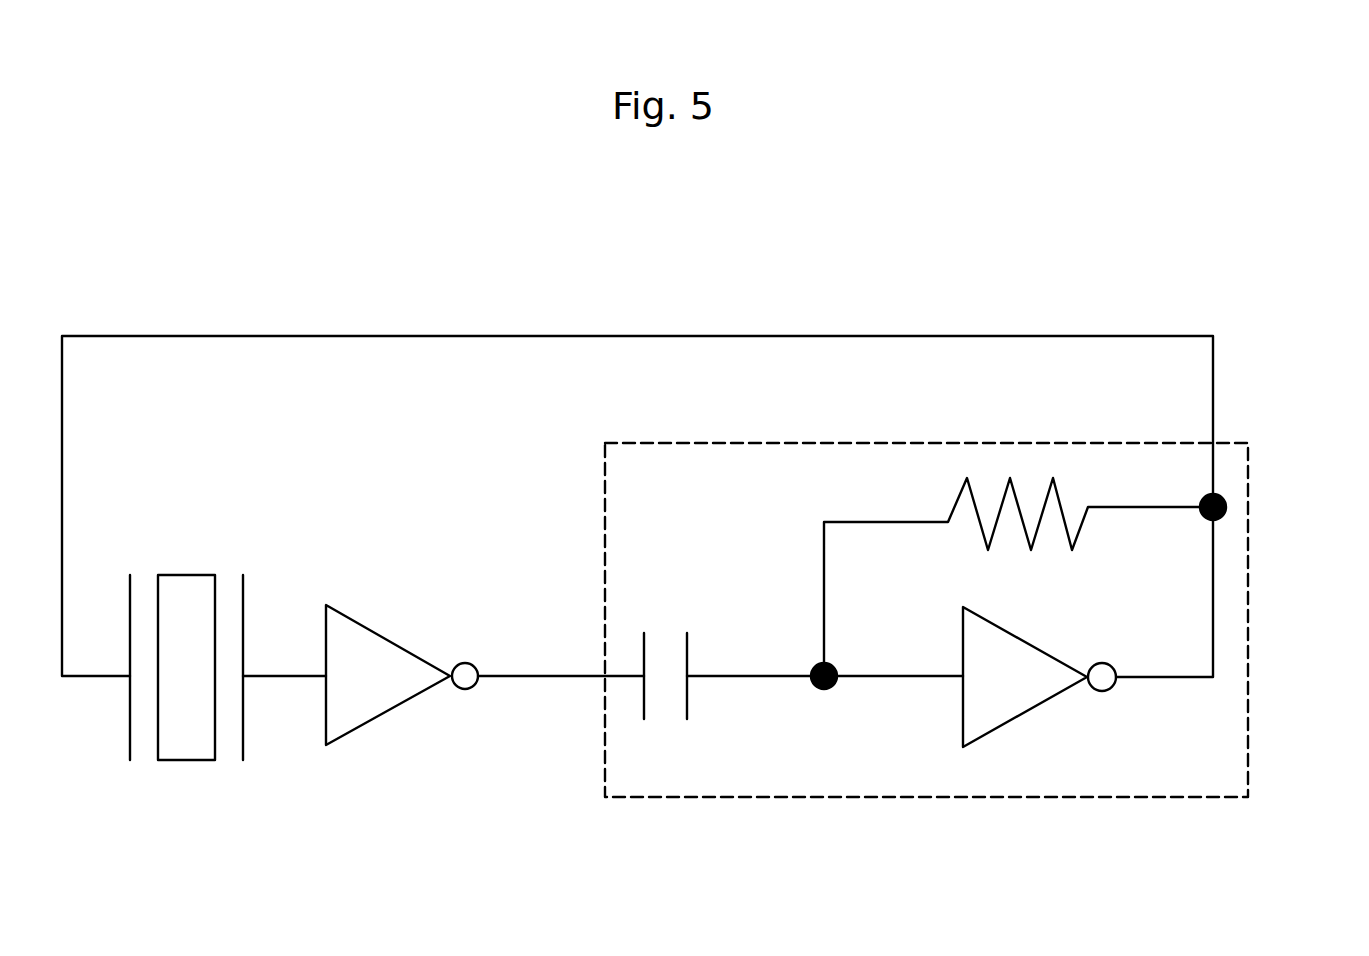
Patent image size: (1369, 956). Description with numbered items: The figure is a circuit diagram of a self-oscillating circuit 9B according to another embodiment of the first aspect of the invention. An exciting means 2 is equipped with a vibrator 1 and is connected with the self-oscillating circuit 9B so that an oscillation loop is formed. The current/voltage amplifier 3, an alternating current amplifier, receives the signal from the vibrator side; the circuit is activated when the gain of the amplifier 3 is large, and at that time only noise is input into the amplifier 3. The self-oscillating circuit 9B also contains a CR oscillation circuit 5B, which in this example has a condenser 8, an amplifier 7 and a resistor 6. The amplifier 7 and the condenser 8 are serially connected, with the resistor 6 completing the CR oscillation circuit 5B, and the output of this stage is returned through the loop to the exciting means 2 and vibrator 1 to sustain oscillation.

The vibrator 1 is at (183, 587).
The exciting means 2 is at (130, 618).
The current/voltage amplifier 3 is at (375, 660).
The CR oscillation circuit 5B is at (1250, 532).
The resistor 6 is at (1012, 490).
The amplifier 7 is at (1031, 672).
The condenser 8 is at (687, 655).
The self-oscillating circuit 9B is at (1240, 327).